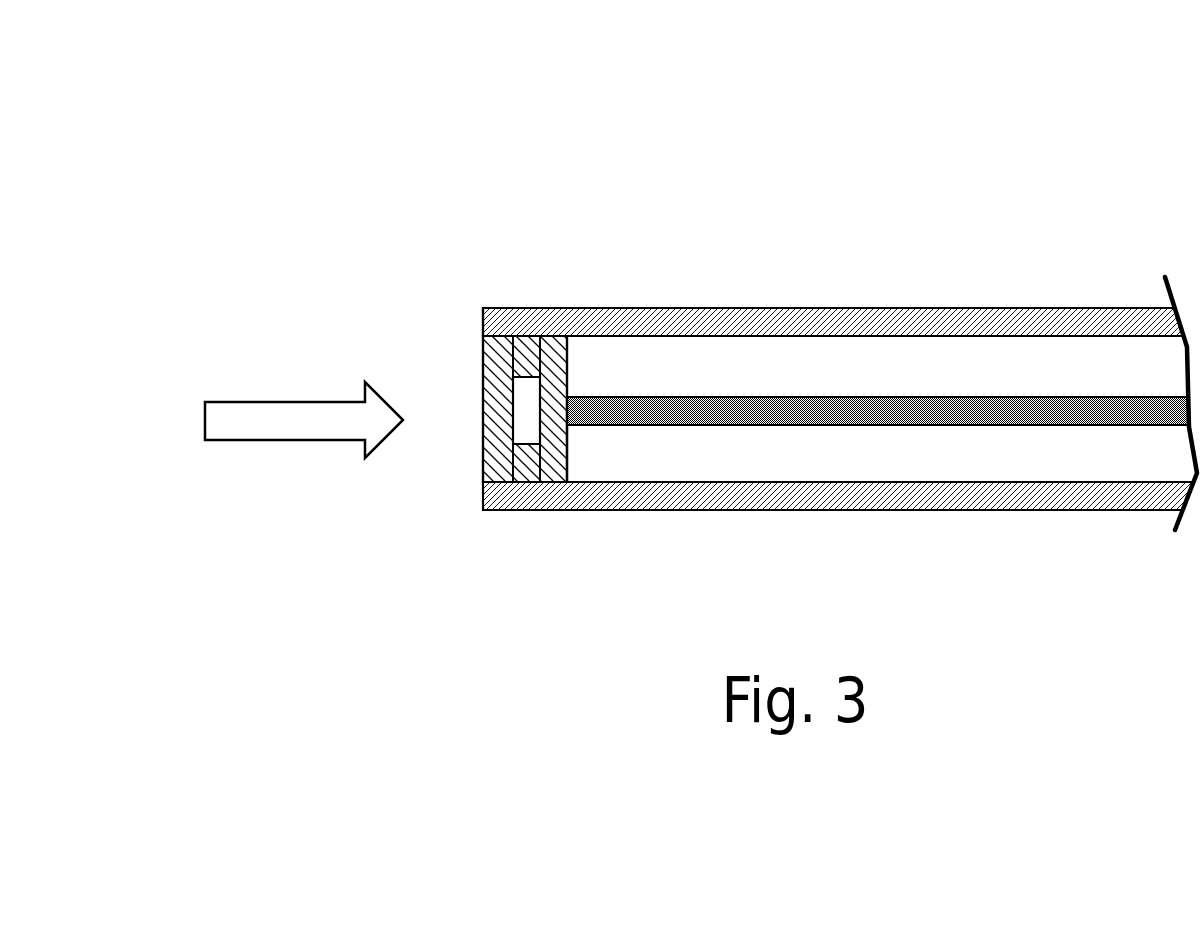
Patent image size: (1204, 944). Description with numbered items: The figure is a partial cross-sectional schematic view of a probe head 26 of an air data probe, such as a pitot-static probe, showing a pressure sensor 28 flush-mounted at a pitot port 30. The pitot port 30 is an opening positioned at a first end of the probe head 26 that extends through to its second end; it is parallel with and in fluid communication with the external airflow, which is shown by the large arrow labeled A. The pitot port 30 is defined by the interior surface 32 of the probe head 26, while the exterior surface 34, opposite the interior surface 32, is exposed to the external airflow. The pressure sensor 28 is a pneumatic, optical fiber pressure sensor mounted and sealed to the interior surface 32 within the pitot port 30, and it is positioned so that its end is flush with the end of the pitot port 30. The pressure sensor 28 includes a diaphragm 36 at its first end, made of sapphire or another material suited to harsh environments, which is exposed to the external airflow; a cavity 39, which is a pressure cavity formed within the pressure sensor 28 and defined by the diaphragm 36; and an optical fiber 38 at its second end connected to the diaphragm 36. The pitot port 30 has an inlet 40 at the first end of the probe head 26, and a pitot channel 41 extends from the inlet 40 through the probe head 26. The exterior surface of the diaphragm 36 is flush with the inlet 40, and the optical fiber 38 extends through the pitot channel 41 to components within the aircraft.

The probe head 26 is at (701, 342).
The pressure sensor 28 is at (880, 511).
The pitot port 30 is at (457, 449).
The interior surface 32 is at (677, 338).
The exterior surface 34 is at (597, 307).
The diaphragm 36 is at (487, 408).
The optical fiber 38 is at (1092, 412).
The cavity 39 is at (527, 428).
The inlet 40 is at (483, 337).
The pitot channel 41 is at (900, 482).